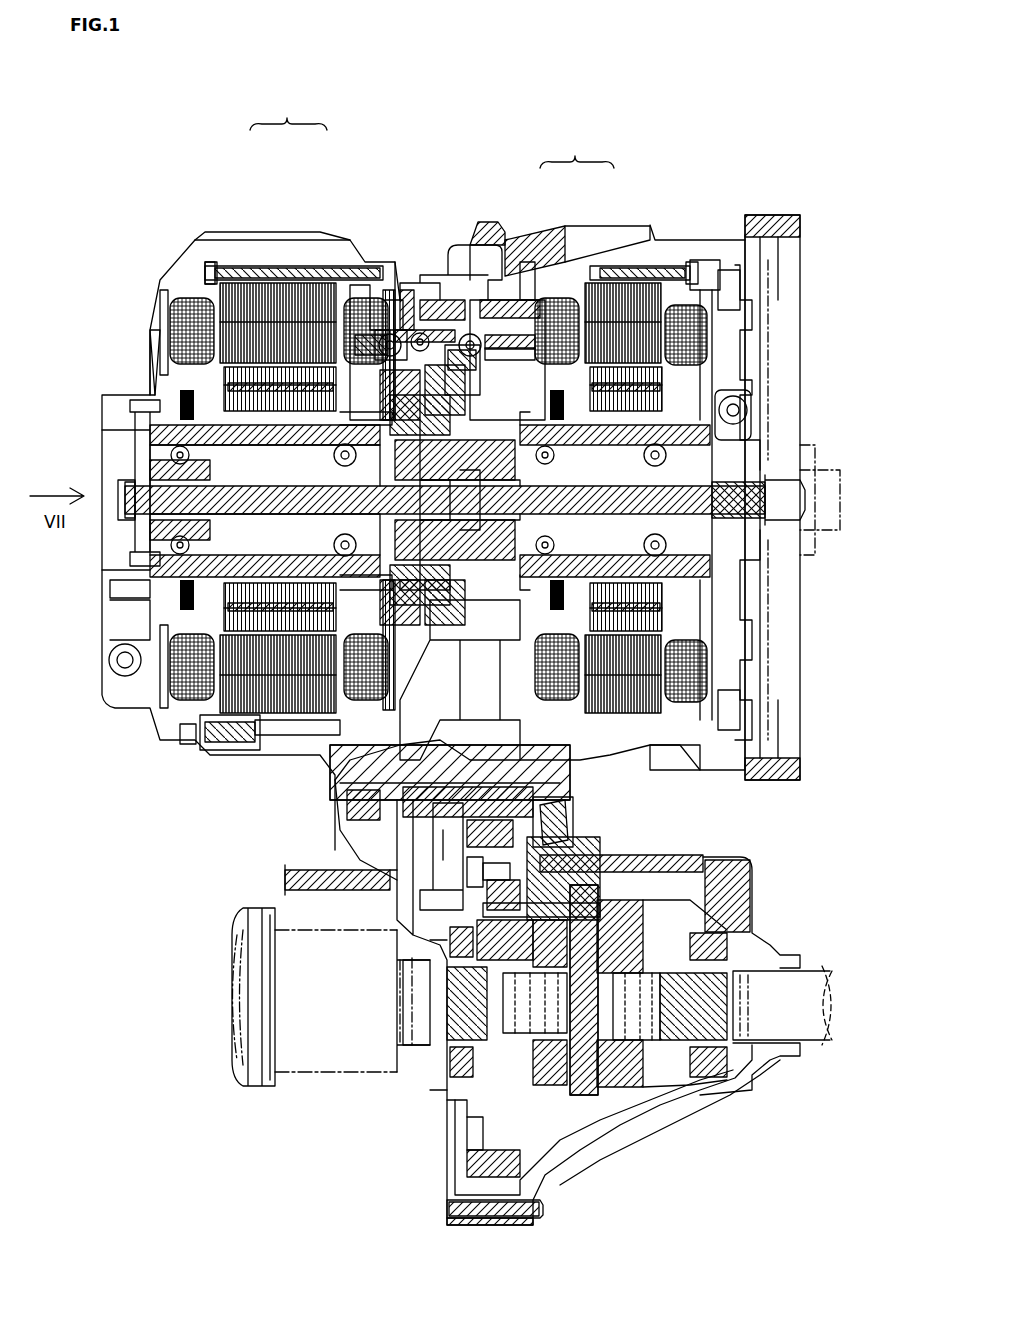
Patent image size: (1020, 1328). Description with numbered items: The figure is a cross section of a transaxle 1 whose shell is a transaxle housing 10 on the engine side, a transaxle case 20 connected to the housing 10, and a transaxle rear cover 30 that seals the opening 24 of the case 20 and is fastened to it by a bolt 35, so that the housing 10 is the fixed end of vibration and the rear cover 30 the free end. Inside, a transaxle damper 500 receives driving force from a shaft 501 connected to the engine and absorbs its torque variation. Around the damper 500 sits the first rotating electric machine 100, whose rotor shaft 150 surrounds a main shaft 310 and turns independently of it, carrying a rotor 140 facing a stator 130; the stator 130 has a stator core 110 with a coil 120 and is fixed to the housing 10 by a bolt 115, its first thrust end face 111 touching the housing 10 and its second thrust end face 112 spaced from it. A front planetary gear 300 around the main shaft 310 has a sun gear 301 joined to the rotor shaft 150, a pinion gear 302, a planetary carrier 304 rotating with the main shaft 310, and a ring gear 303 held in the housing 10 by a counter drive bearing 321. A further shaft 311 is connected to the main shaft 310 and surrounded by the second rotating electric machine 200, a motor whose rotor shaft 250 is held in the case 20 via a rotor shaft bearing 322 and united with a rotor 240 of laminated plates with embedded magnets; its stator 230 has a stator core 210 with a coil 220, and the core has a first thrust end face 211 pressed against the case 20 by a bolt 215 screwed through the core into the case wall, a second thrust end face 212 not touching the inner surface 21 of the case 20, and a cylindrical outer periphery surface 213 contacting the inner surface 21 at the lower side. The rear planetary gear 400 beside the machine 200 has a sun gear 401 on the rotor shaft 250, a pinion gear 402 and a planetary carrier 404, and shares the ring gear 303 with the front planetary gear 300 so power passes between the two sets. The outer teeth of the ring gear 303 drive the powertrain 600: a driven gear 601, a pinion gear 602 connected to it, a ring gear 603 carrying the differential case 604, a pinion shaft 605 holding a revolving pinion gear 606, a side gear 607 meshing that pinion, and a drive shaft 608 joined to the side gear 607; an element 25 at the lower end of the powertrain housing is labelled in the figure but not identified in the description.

The transaxle 1 is at (775, 72).
The transaxle housing 10 is at (770, 214).
The transaxle case 20 is at (385, 850).
The inner surface 21 is at (235, 715).
The opening 24 is at (165, 318).
The bolt 25 is at (545, 1212).
The transaxle rear cover 30 is at (206, 235).
The bolt 35 is at (180, 735).
The first rotating electric machine 100 is at (657, 101).
The stator core 110 is at (640, 290).
The first thrust end face 111 is at (600, 722).
The second thrust end face 112 is at (668, 762).
The bolt 115 is at (705, 258).
The coil 120 is at (590, 290).
The stator 130 is at (577, 149).
The rotor 140 is at (640, 265).
The rotor shaft 150 is at (660, 300).
The second rotating electric machine 200 is at (245, 101).
The stator core 210 is at (278, 283).
The first thrust end face 211 is at (346, 290).
The second thrust end face 212 is at (172, 298).
The outer periphery surface 213 is at (262, 735).
The bolt 215 is at (205, 273).
The coil 220 is at (308, 283).
The stator 230 is at (288, 112).
The rotor 240 is at (252, 290).
The rotor shaft 250 is at (222, 265).
The front planetary gear 300 is at (517, 101).
The sun gear 301 is at (478, 290).
The pinion gear 302 is at (495, 340).
The ring gear 303 is at (462, 345).
The planetary carrier 304 is at (526, 262).
The main shaft 310 is at (700, 520).
The shaft 311 is at (128, 480).
The counter drive bearing 321 is at (420, 330).
The rotor shaft bearing 322 is at (360, 300).
The rear planetary gear 400 is at (409, 101).
The sun gear 401 is at (383, 330).
The pinion gear 402 is at (398, 290).
The planetary carrier 404 is at (442, 300).
The transaxle damper 500 is at (824, 351).
The shaft 501 is at (826, 450).
The powertrain 600 is at (803, 845).
The driven gear 601 is at (400, 880).
The pinion gear 602 is at (560, 820).
The ring gear 603 is at (560, 840).
The differential case 604 is at (585, 855).
The pinion shaft 605 is at (583, 1095).
The pinion gear 606 is at (615, 1050).
The side gear 607 is at (660, 1085).
The drive shaft 608 is at (812, 968).